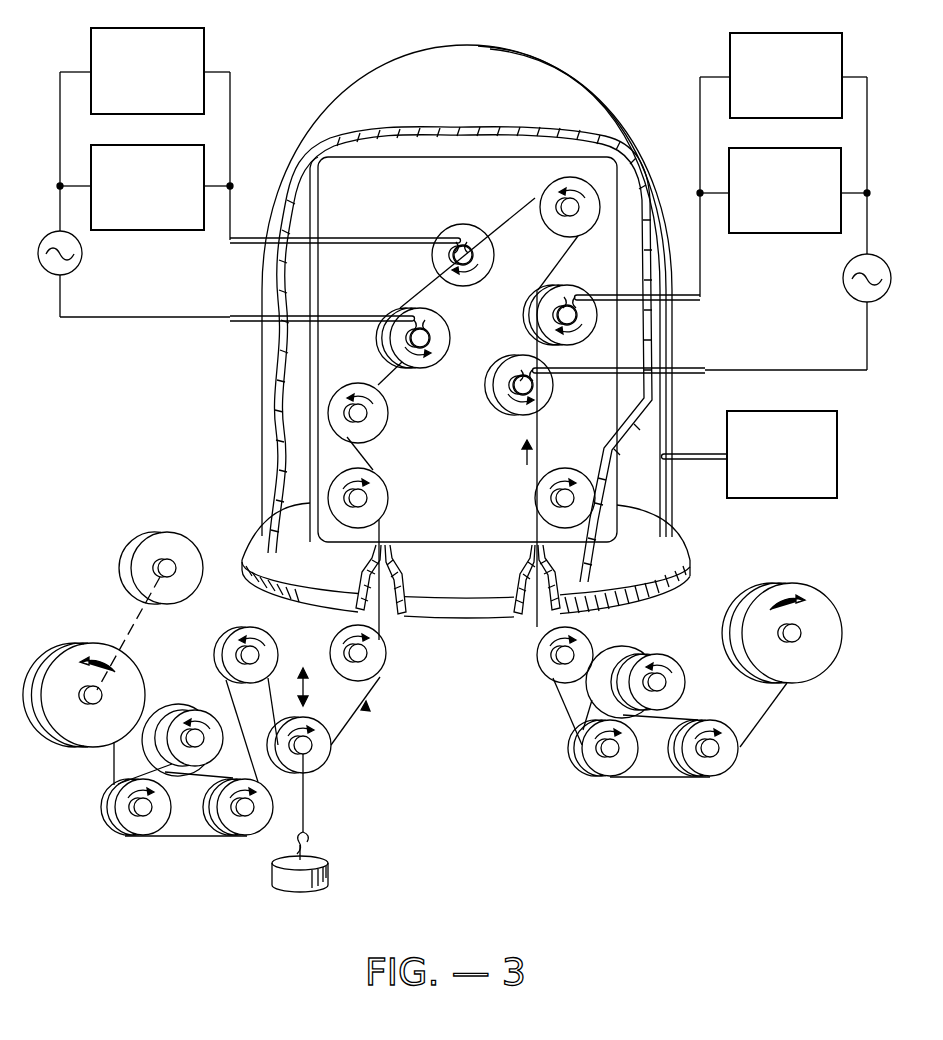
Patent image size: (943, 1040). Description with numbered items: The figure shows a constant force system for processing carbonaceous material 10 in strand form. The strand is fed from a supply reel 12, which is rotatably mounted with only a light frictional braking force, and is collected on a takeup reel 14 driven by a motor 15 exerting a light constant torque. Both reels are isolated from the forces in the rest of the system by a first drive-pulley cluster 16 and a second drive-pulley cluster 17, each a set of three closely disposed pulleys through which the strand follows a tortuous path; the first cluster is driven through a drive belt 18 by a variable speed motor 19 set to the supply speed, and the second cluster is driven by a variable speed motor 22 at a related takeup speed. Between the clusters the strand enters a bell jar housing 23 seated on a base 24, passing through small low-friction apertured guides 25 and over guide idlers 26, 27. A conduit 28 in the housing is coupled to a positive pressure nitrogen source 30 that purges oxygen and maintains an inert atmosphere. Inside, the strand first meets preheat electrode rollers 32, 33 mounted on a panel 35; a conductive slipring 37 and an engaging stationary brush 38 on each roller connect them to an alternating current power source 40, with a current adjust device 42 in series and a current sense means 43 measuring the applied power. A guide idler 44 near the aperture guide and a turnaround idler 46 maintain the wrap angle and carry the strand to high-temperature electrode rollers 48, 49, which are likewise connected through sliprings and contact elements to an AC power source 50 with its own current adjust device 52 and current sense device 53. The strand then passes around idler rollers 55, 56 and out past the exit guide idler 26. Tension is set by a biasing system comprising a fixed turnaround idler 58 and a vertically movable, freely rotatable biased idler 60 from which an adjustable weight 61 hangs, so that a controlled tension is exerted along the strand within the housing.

The carbonaceous material 10 is at (560, 695).
The supply reel 12 is at (799, 586).
The takeup reel 14 is at (90, 643).
The motor 15 is at (165, 532).
The first drive-pulley cluster 16 is at (638, 790).
The second drive-pulley cluster 17 is at (172, 838).
The drive belt 18 is at (217, 775).
The variable speed motor 19 is at (640, 650).
The variable speed motor 22 is at (150, 702).
The bell jar housing 23 is at (600, 101).
The base 24 is at (660, 585).
The apertured guides 25 is at (396, 615).
The exit guide idler 26 is at (388, 662).
The guide idler 27 is at (537, 660).
The conduit 28 is at (680, 454).
The positive pressure nitrogen source 30 is at (727, 494).
The preheat electrode roller 32 is at (510, 412).
The preheat electrode roller 33 is at (572, 287).
The panel 35 is at (485, 528).
The conductive slipring 37 is at (475, 232).
The stationary brush 38 is at (476, 232).
The external power source 40 is at (843, 276).
The current adjust device 42 is at (732, 148).
The current sense means 43 is at (729, 58).
The guide idler 44 is at (535, 494).
The turnaround idler 46 is at (543, 200).
The high-temperature electrode roller 48 is at (445, 258).
The high-temperature electrode roller 49 is at (416, 368).
The AC power source 50 is at (84, 252).
The current adjust device 52 is at (187, 145).
The current sense device 53 is at (204, 56).
The idler roller 55 is at (383, 420).
The idler roller 56 is at (380, 478).
The turnaround idler 58 is at (232, 635).
The mechanically biased idler 60 is at (329, 757).
The adjustable weight 61 is at (327, 866).